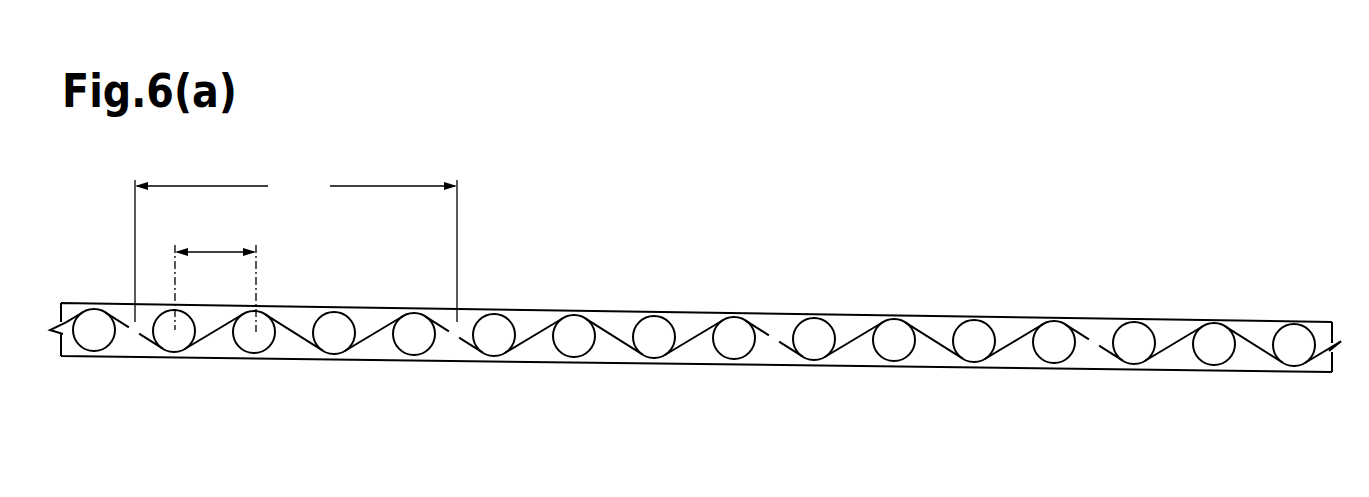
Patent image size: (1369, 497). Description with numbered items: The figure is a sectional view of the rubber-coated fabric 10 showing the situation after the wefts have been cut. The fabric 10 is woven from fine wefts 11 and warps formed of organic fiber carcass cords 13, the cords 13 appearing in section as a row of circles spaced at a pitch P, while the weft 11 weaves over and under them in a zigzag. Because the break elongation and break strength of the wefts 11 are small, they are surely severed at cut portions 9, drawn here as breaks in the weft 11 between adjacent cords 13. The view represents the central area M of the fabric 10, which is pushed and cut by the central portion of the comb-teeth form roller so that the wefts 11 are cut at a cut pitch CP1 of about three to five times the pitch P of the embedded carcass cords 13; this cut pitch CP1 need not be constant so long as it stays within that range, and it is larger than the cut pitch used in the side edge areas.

The cut portion 9 is at (133, 339).
The rubber-coated fabric 10 is at (90, 292).
The weft 11 is at (697, 343).
The carcass cord 13 is at (575, 334).
The central area M is at (1100, 272).
The cut pitch in the central area CP1 is at (296, 247).
The pitch of the carcass cords P is at (215, 277).